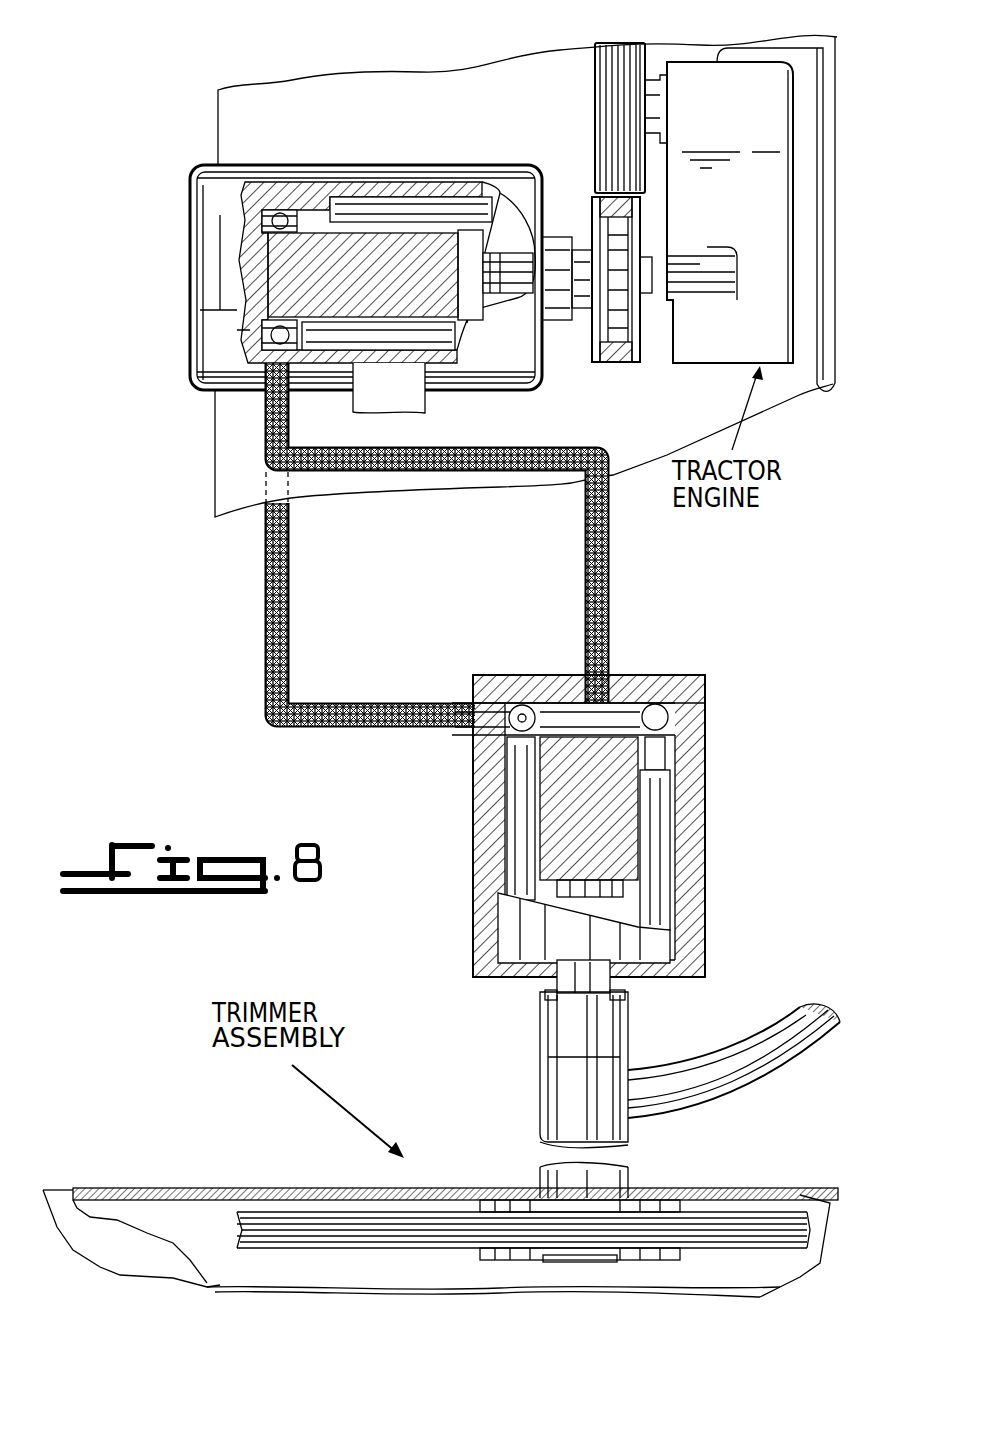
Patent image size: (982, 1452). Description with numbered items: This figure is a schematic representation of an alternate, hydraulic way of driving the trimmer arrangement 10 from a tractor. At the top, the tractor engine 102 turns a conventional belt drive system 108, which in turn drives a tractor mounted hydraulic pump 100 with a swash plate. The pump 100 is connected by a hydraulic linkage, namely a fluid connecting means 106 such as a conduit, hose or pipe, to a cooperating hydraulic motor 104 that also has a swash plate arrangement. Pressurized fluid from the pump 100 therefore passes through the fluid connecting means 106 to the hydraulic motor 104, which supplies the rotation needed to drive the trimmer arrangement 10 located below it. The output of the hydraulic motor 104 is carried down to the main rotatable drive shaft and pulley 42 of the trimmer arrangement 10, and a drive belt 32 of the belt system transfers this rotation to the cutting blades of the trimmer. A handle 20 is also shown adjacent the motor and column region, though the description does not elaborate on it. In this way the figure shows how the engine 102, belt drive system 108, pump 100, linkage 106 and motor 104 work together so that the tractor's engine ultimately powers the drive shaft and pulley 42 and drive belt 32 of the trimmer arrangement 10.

The trimmer arrangement 10 is at (437, 1172).
The handle 20 is at (792, 1057).
The drive belt 32 is at (373, 1243).
The main rotatable drive shaft and pulley 42 is at (532, 1255).
The hydraulic pump 100 is at (220, 218).
The engine 102 is at (773, 347).
The hydraulic motor 104 is at (703, 717).
The fluid connecting means 106 is at (587, 580).
The belt drive system 108 is at (648, 60).